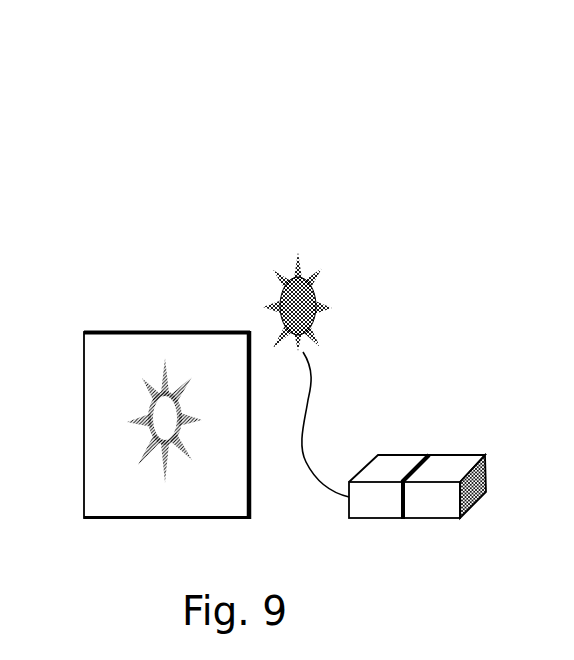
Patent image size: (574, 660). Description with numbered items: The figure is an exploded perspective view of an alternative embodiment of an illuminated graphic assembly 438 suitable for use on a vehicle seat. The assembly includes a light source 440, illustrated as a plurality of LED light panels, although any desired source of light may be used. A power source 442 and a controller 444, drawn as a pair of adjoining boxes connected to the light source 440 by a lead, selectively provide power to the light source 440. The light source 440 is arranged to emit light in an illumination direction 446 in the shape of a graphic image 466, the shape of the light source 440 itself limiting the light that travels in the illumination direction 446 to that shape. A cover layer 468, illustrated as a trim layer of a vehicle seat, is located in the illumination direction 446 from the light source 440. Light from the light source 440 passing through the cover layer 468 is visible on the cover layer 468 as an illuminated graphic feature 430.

The illuminated graphic assembly 438 is at (410, 202).
The illumination direction 446 is at (148, 213).
The illuminated graphic feature 430 is at (157, 381).
The graphic image 466 is at (279, 291).
The light source 440 is at (318, 336).
The cover layer 468 is at (251, 518).
The controller 444 is at (395, 512).
The power source 442 is at (451, 512).